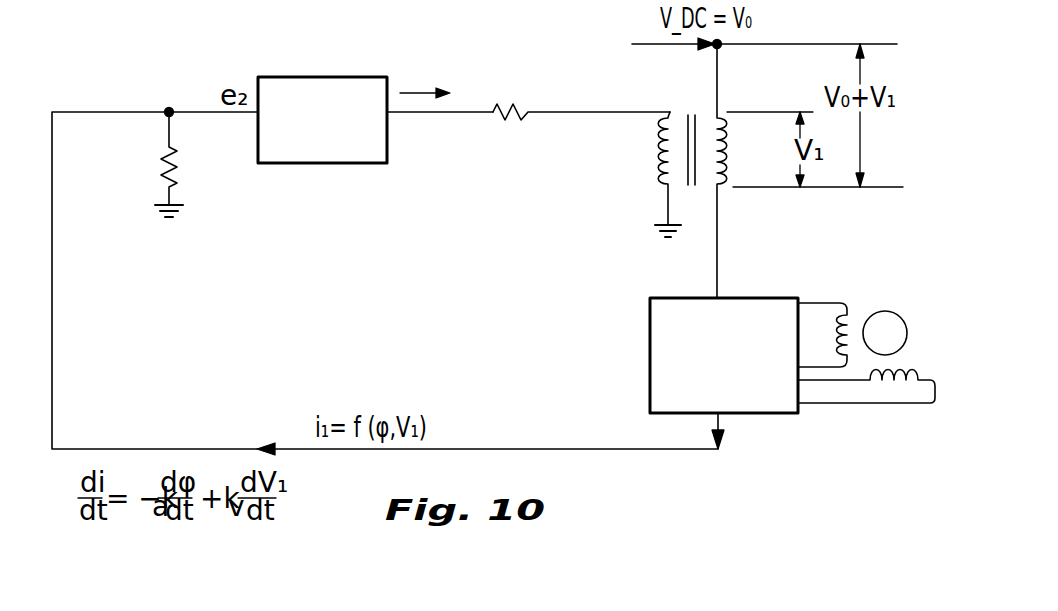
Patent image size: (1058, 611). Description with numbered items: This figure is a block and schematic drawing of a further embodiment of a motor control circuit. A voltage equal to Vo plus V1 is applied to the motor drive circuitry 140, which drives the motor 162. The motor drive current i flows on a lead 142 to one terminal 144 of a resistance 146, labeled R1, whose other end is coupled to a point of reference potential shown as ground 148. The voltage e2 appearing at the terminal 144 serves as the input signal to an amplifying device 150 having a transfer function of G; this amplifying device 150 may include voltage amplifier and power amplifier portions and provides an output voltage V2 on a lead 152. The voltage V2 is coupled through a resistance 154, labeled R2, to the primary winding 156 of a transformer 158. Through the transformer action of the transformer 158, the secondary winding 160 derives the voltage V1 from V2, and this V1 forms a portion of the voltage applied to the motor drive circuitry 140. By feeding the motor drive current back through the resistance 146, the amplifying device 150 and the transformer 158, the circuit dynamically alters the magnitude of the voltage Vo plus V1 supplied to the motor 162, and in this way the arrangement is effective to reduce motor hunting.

The motor drive circuitry 140 is at (653, 362).
The lead 142 is at (177, 444).
The terminal 144 is at (169, 108).
The resistance 146 is at (162, 158).
The ground 148 is at (184, 207).
The amplifying device 150 is at (341, 164).
The lead 152 is at (395, 110).
The resistance 154 is at (504, 118).
The primary winding 156 is at (663, 172).
The transformer 158 is at (710, 216).
The secondary winding 160 is at (726, 160).
The motor 162 is at (882, 311).